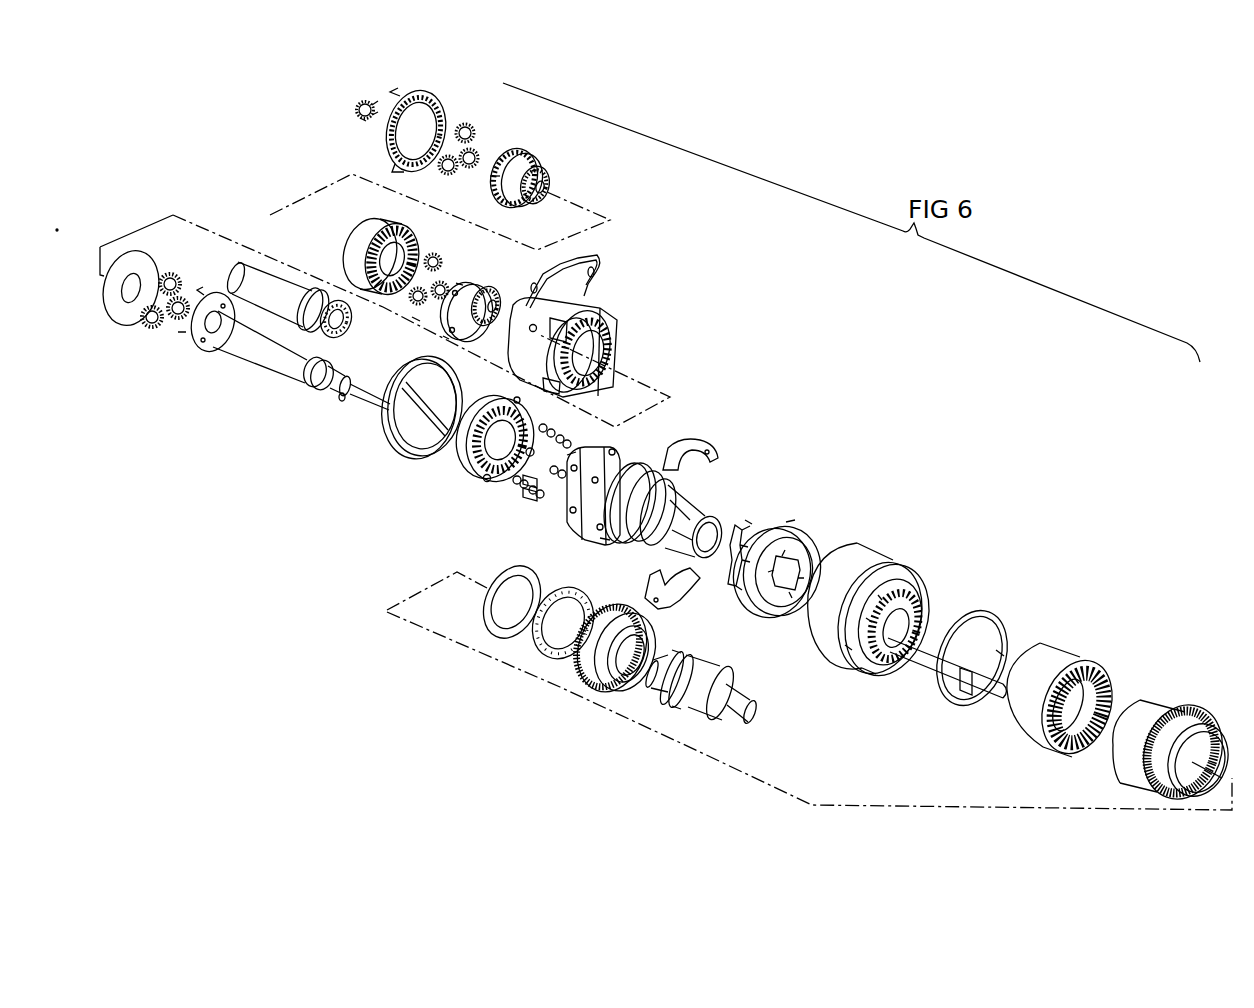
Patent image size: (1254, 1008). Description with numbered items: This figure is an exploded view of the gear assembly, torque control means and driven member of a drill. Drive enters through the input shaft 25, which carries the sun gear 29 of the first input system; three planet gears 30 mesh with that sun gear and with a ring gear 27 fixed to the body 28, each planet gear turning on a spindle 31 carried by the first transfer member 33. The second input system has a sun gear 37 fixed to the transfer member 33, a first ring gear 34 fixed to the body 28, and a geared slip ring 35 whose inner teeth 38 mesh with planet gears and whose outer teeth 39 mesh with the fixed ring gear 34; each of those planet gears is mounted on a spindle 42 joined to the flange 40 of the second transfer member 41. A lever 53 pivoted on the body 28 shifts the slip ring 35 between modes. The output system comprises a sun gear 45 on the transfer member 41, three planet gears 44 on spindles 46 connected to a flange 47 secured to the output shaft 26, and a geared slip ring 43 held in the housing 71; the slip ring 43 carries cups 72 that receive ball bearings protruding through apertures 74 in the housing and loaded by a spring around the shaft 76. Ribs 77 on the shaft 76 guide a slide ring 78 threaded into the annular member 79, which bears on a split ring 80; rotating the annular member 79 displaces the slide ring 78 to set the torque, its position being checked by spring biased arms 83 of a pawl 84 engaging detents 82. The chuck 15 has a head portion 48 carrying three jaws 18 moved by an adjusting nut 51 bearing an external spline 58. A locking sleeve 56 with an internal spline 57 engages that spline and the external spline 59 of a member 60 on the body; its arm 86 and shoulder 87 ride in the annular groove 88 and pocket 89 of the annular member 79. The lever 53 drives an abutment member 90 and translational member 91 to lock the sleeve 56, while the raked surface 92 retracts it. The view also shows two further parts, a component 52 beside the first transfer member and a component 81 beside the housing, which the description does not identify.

The chuck 15 is at (719, 706).
The jaws 18 is at (742, 720).
The input shaft 25 is at (350, 113).
The output shaft 26 is at (253, 347).
The ring gear 27 is at (440, 101).
The body 28 is at (589, 386).
The sun gear 29 is at (362, 120).
The planet gears 30 is at (474, 128).
The spindle 31 is at (492, 180).
The first transfer member 33 is at (554, 182).
The first ring gear 34 is at (602, 350).
The geared slip ring 35 is at (325, 270).
The sun gear 37 is at (528, 196).
The inner teeth 38 is at (428, 255).
The outer teeth 39 is at (372, 228).
The flange 40 is at (477, 306).
The second transfer member 41 is at (478, 282).
The spindle 42 is at (416, 320).
The geared slip ring 43 is at (468, 452).
The planet gears 44 is at (137, 330).
The sun gear 45 is at (490, 296).
The spindle 46 is at (182, 335).
The flange 47 is at (218, 352).
The head portion 48 is at (692, 708).
The adjusting nut 51 is at (614, 608).
The gear 52 is at (530, 152).
The lever 53 is at (588, 250).
The locking sleeve 56 is at (1073, 702).
The internal spline 57 is at (1085, 758).
The external spline 58 is at (598, 606).
The external spline 59 is at (1195, 713).
The member 60 is at (1175, 728).
The housing 71 is at (658, 480).
The cups 72 is at (470, 472).
The apertures 74 is at (660, 470).
The shaft 76 is at (742, 520).
The ribs 77 is at (627, 535).
The slide ring 78 is at (822, 540).
The annular member 79 is at (868, 615).
The split ring 80 is at (672, 608).
The sleeve 81 is at (690, 500).
The detents 82 is at (900, 610).
The spring biased arms 83 is at (748, 518).
The pawl 84 is at (770, 528).
The arm 86 is at (990, 696).
The shoulder 87 is at (1004, 688).
The annular groove 88 is at (920, 575).
The pocket 89 is at (843, 655).
The abutment member 90 is at (380, 436).
The translational member 91 is at (990, 604).
The raked surface 92 is at (868, 620).